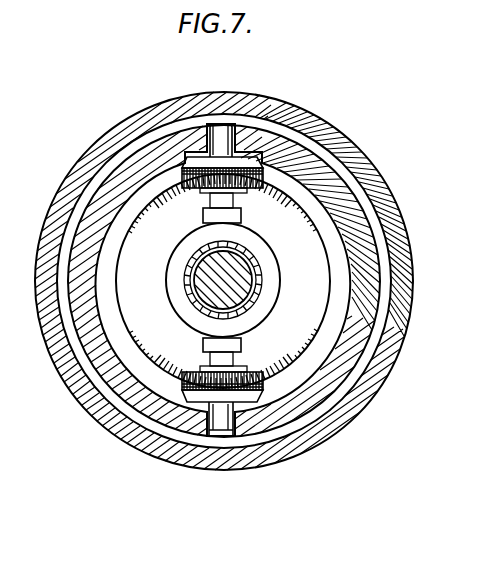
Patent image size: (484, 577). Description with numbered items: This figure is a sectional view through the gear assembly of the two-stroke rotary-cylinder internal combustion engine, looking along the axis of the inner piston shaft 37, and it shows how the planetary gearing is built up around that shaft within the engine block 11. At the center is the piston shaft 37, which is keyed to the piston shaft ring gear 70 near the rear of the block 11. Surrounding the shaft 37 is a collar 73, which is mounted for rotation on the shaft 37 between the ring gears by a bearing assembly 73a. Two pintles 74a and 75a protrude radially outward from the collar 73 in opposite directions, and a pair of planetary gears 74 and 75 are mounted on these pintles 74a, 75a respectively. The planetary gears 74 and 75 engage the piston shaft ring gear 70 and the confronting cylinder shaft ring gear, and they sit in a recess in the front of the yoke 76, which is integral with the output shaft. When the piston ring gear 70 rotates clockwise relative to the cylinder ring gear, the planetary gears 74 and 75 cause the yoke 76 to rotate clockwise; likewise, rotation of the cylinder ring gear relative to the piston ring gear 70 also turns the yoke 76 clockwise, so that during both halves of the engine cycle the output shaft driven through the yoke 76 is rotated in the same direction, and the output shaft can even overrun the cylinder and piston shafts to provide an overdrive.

The engine block 11 is at (115, 130).
The inner piston shaft 37 is at (203, 270).
The piston shaft ring gear 70 is at (278, 218).
The collar 73 is at (268, 297).
The bearing assembly 73a is at (187, 297).
The planetary gear 74 is at (238, 170).
The pintle 74a is at (211, 137).
The planetary gear 75 is at (188, 400).
The pintle 75a is at (219, 423).
The yoke 76 is at (347, 190).